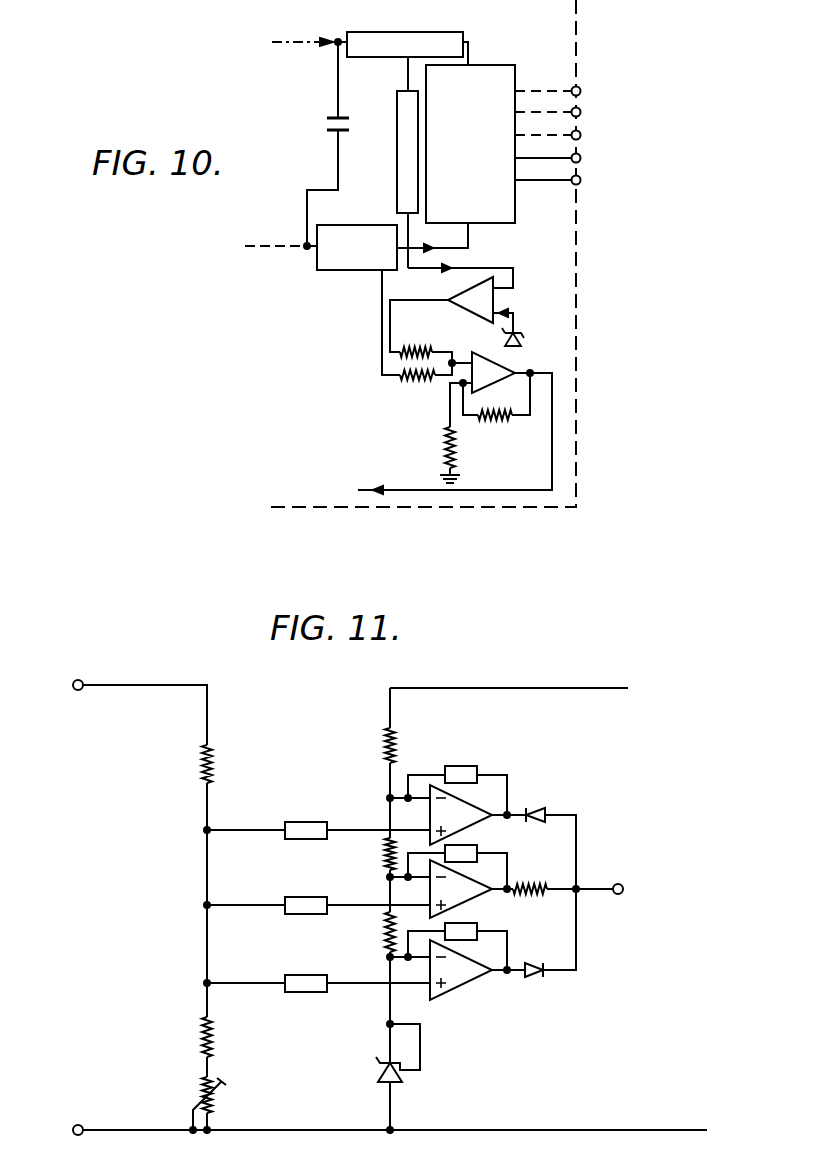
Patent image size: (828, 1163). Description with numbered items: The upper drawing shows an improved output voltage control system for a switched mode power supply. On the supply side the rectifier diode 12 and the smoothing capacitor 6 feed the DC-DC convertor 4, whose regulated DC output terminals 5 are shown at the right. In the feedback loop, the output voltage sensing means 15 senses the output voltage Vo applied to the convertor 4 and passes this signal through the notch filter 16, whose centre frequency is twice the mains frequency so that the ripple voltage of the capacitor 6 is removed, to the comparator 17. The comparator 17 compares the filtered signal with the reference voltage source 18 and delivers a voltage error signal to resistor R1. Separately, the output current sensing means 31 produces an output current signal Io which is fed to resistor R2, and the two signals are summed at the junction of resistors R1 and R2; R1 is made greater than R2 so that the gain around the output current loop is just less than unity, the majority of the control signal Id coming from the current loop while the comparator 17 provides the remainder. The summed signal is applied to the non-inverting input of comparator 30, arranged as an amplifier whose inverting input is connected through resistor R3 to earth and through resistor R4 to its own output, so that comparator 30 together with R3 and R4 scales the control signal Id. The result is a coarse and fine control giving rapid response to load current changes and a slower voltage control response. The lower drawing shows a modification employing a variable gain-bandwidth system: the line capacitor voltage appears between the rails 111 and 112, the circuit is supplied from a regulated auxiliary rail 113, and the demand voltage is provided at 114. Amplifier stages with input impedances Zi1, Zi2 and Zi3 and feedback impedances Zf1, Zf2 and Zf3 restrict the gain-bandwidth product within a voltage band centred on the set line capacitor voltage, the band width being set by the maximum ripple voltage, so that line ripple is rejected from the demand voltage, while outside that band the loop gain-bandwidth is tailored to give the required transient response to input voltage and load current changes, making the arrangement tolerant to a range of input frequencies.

In FIG. 10, the rectifier diode 12 is at (333, 41).
In FIG. 10, the smoothing capacitor 6 is at (328, 124).
In FIG. 10, the output voltage sensing means 15 is at (412, 32).
In FIG. 10, the notch filter 16 is at (386, 119).
In FIG. 10, the DC-DC convertor 4 is at (504, 79).
In FIG. 10, the regulated DC output terminals 5 is at (551, 183).
In FIG. 10, the output current sensing means 31 is at (348, 271).
In FIG. 10, the comparator 17 is at (480, 300).
In FIG. 10, the reference voltage source 18 is at (531, 342).
In FIG. 10, the comparator 30 is at (512, 384).
In FIG. 10, the resistor R1 is at (426, 342).
In FIG. 10, the resistor R2 is at (417, 337).
In FIG. 10, the resistor R3 is at (433, 433).
In FIG. 10, the resistor R4 is at (496, 410).
In FIG. 10, the output voltage Vo is at (338, 42).
In FIG. 10, the output current Io is at (432, 237).
In FIG. 10, the control signal Id is at (363, 476).
In FIG. 11, the rail 111 is at (148, 685).
In FIG. 11, the rail 112 is at (124, 1130).
In FIG. 11, the regulated auxiliary rail 113 is at (586, 688).
In FIG. 11, the demand voltage output 114 is at (596, 888).
In FIG. 11, the input impedance Zi1 is at (318, 892).
In FIG. 11, the input impedance Zi2 is at (318, 816).
In FIG. 11, the input impedance Zi3 is at (318, 970).
In FIG. 11, the feedback impedance Zf1 is at (447, 856).
In FIG. 11, the feedback impedance Zf2 is at (447, 776).
In FIG. 11, the feedback impedance Zf3 is at (451, 937).